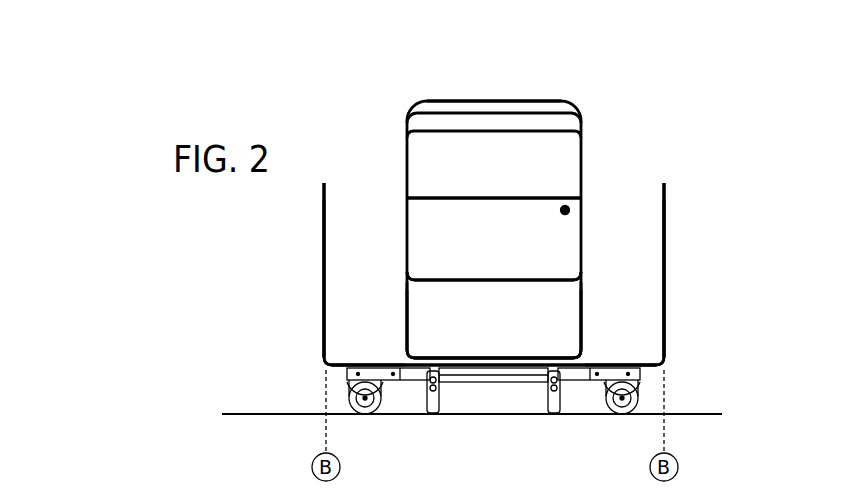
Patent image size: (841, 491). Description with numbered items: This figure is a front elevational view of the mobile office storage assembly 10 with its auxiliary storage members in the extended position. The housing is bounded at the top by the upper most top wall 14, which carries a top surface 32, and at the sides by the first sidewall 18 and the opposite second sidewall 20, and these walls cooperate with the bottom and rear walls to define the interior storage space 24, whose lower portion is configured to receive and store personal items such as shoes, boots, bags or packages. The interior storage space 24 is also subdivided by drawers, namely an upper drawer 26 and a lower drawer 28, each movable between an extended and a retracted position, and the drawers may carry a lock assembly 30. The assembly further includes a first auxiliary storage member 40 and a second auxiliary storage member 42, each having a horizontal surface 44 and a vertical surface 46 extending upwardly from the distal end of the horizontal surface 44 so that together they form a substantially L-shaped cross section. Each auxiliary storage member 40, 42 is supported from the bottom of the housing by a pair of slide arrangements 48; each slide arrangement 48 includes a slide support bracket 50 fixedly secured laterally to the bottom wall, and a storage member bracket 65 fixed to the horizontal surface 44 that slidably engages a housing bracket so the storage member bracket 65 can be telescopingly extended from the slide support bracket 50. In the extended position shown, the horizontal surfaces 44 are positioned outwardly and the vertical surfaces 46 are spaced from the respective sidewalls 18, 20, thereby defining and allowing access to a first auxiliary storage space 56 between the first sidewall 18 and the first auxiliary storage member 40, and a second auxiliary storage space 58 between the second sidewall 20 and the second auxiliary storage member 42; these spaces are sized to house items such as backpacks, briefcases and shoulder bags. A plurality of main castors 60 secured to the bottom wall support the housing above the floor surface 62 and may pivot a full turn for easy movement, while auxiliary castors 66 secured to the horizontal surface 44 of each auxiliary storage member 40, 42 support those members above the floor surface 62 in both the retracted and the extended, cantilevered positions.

The mobile office storage assembly 10 is at (612, 52).
The top wall 14 is at (480, 108).
The first sidewall 18 is at (580, 282).
The second sidewall 20 is at (406, 302).
The interior storage space 24 is at (510, 334).
The upper drawer 26 is at (556, 148).
The lower drawer 28 is at (566, 244).
The lock assembly 30 is at (571, 209).
The top surface 32 is at (455, 97).
The first auxiliary storage member 40 is at (667, 220).
The second auxiliary storage member 42 is at (321, 240).
The horizontal surface 44 is at (372, 378).
The vertical surface 46 is at (322, 291).
The slide arrangement 48 is at (496, 392).
The slide support bracket 50 is at (465, 376).
The first auxiliary storage space 56 is at (641, 174).
The second auxiliary storage space 58 is at (352, 172).
The main castor 60 is at (430, 405).
The floor surface 62 is at (252, 412).
The storage member bracket 65 is at (410, 382).
The auxiliary castor 66 is at (365, 414).